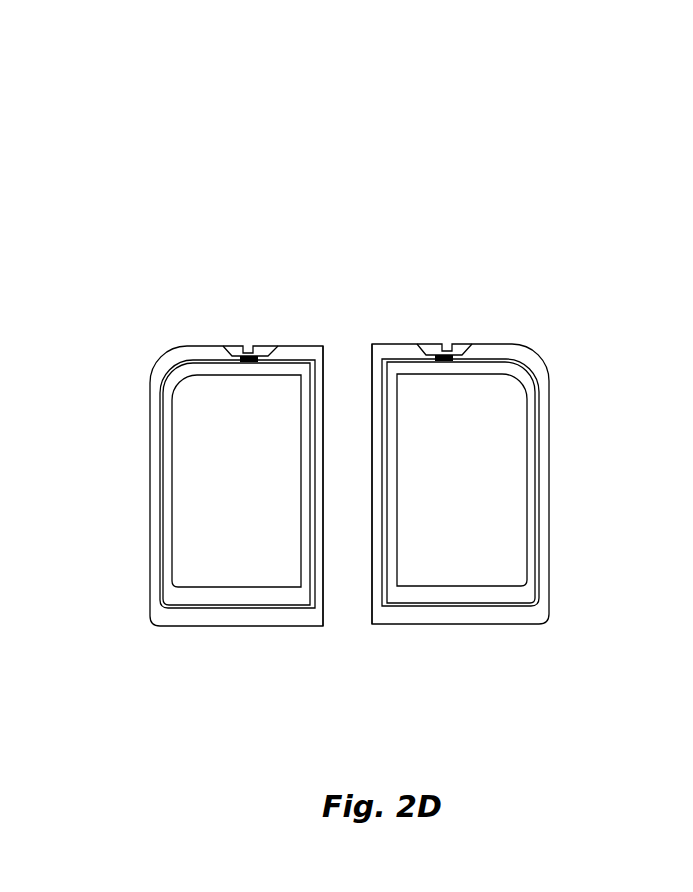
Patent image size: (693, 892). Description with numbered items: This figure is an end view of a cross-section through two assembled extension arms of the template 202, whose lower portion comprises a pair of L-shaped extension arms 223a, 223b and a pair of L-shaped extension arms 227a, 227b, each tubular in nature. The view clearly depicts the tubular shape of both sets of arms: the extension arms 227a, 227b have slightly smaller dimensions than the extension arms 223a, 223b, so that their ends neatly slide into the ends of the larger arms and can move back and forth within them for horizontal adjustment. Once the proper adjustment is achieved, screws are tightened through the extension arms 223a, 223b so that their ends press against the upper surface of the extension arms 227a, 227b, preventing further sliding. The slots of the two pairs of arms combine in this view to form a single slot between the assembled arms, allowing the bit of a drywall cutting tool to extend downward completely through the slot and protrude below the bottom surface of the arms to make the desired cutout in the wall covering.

The template 202 is at (373, 153).
The extension arm 223a is at (550, 397).
The extension arm 223b is at (148, 398).
The extension arm 227a is at (532, 482).
The extension arm 227b is at (168, 485).